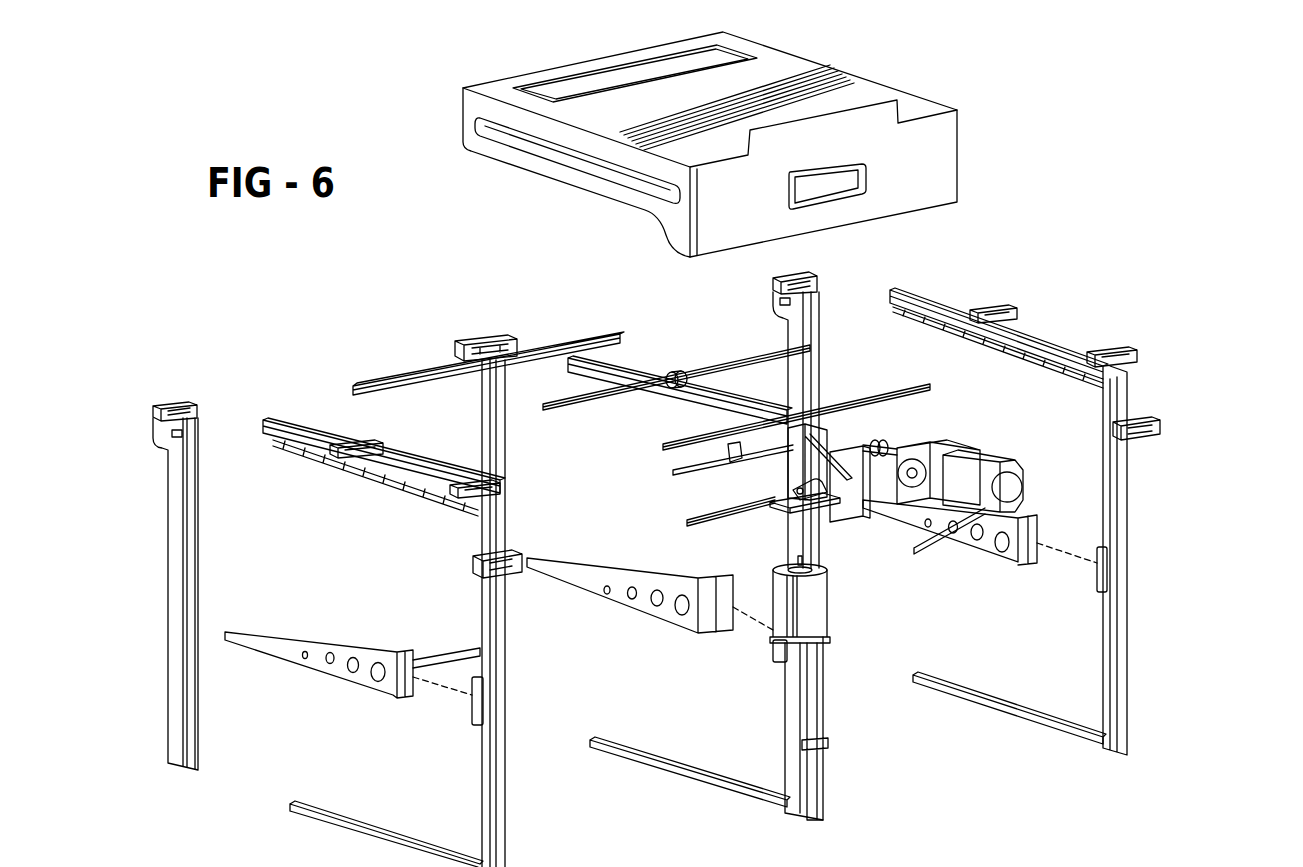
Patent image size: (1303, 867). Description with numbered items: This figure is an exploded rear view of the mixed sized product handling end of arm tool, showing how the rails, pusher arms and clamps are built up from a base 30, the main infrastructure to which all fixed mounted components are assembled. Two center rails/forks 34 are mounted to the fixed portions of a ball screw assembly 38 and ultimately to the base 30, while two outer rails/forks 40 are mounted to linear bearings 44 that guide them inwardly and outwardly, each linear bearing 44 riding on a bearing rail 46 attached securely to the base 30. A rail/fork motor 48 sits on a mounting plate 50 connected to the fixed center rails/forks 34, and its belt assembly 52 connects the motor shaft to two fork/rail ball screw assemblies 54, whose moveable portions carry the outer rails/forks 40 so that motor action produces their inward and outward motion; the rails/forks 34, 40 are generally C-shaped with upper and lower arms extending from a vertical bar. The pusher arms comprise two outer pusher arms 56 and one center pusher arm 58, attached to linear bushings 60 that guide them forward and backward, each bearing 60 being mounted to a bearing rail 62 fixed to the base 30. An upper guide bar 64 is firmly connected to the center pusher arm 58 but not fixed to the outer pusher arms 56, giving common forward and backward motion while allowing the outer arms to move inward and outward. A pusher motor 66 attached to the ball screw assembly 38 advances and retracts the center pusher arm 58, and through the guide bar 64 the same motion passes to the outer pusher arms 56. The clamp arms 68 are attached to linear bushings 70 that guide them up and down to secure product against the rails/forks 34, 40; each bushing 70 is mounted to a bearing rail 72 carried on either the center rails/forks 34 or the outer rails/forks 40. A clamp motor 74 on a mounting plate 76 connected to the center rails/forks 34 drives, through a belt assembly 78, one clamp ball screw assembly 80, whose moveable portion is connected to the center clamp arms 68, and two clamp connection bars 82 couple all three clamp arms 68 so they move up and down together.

The base 30 is at (960, 145).
The center rails/forks 34 is at (698, 790).
The ball screw assembly 38 is at (673, 375).
The outer rails/forks 40 is at (1127, 732).
The linear bearings 44 is at (327, 450).
The bearing rail 46 is at (595, 403).
The rail/fork motor 48 is at (980, 447).
The mounting plate 50 is at (832, 422).
The belt assembly 52 is at (867, 513).
The fork/rail ball screw assemblies 54 is at (737, 467).
The outer pusher arms 56 is at (198, 568).
The center pusher arm 58 is at (483, 393).
The linear bushings 60 is at (190, 400).
The bearing rail 62 is at (273, 447).
The upper guide bar 64 is at (417, 373).
The pusher motor 66 is at (1023, 485).
The clamp arms 68 is at (290, 663).
The linear bushings 70 is at (468, 710).
The bearing rail 72 is at (473, 827).
The clamp motor 74 is at (830, 630).
The mounting plate 76 is at (803, 510).
The belt assembly 78 is at (812, 508).
The clamp ball screw assembly 80 is at (825, 697).
The clamp connection bars 82 is at (457, 647).